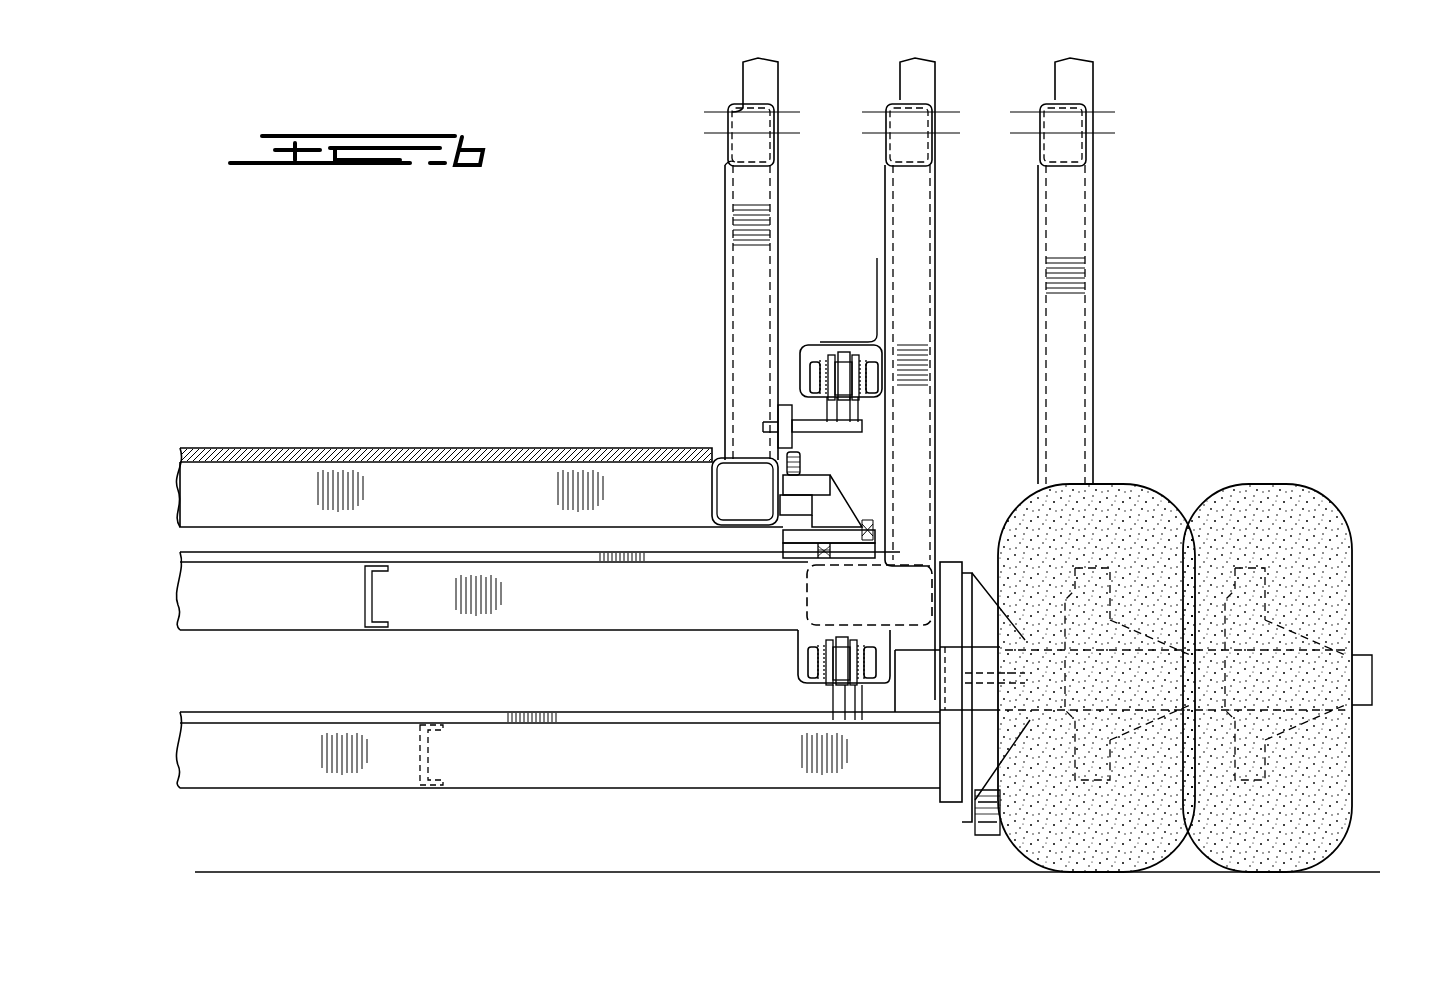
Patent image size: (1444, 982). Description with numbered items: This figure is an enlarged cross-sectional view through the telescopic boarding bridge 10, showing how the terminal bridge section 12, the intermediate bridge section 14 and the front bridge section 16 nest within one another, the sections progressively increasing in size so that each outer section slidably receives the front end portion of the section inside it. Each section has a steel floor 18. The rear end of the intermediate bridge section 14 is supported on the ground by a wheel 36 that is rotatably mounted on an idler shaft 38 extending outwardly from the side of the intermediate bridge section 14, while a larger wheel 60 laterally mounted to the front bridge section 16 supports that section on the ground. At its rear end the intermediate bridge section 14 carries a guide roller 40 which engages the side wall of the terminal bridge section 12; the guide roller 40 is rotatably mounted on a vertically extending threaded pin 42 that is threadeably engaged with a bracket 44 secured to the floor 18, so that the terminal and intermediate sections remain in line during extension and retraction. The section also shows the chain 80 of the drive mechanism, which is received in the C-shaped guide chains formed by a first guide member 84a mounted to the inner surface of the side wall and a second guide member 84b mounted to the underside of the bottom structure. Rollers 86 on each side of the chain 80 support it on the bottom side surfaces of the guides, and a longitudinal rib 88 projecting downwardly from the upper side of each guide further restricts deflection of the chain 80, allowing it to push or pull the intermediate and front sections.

The telescopic boarding bridge 10 is at (1217, 208).
The terminal bridge section 12 is at (743, 80).
The intermediate bridge section 14 is at (935, 80).
The front bridge section 16 is at (1093, 90).
The floor 18 is at (456, 712).
The wheels 36 is at (1115, 520).
The idler shaft 38 is at (985, 695).
The guide rollers 40 is at (792, 495).
The threaded pin 42 is at (802, 462).
The bracket 44 is at (850, 510).
The wheels 60 is at (1280, 520).
The chains 80 is at (870, 378).
The first guide member 84a is at (802, 345).
The second guide member 84b is at (802, 680).
The rollers 86 is at (812, 378).
The longitudinal rib 88 is at (845, 362).